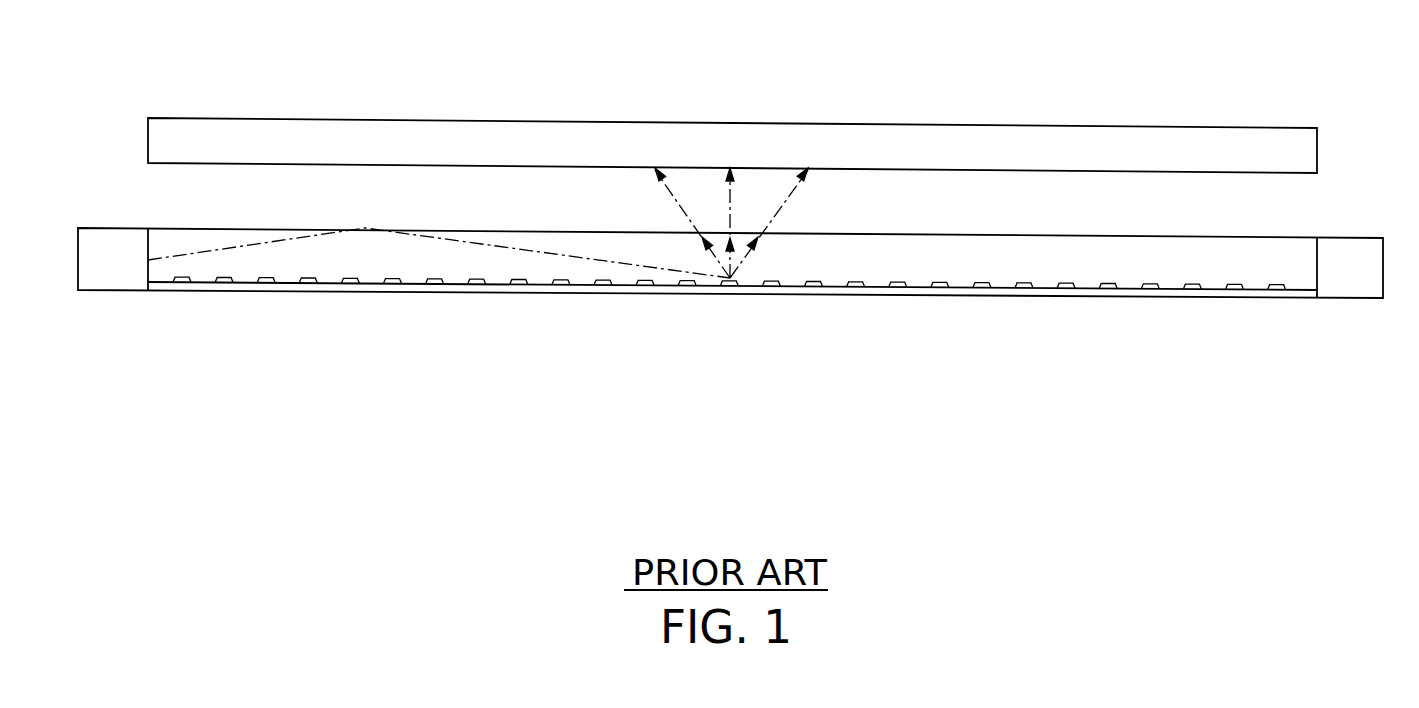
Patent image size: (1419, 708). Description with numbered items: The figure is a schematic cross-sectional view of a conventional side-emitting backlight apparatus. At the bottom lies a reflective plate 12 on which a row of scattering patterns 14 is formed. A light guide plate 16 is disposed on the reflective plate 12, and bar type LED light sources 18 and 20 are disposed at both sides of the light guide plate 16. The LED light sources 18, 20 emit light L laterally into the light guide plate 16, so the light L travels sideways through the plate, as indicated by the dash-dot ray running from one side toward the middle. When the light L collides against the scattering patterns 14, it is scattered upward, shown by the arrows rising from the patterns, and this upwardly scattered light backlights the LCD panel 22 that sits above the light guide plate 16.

The reflective plate 12 is at (272, 286).
The scattering patterns 14 is at (437, 280).
The light guide plate 16 is at (968, 256).
The bar type LED light source 18 is at (95, 243).
The bar type LED light source 20 is at (1364, 258).
The LCD panel 22 is at (1157, 146).
The light L is at (580, 262).